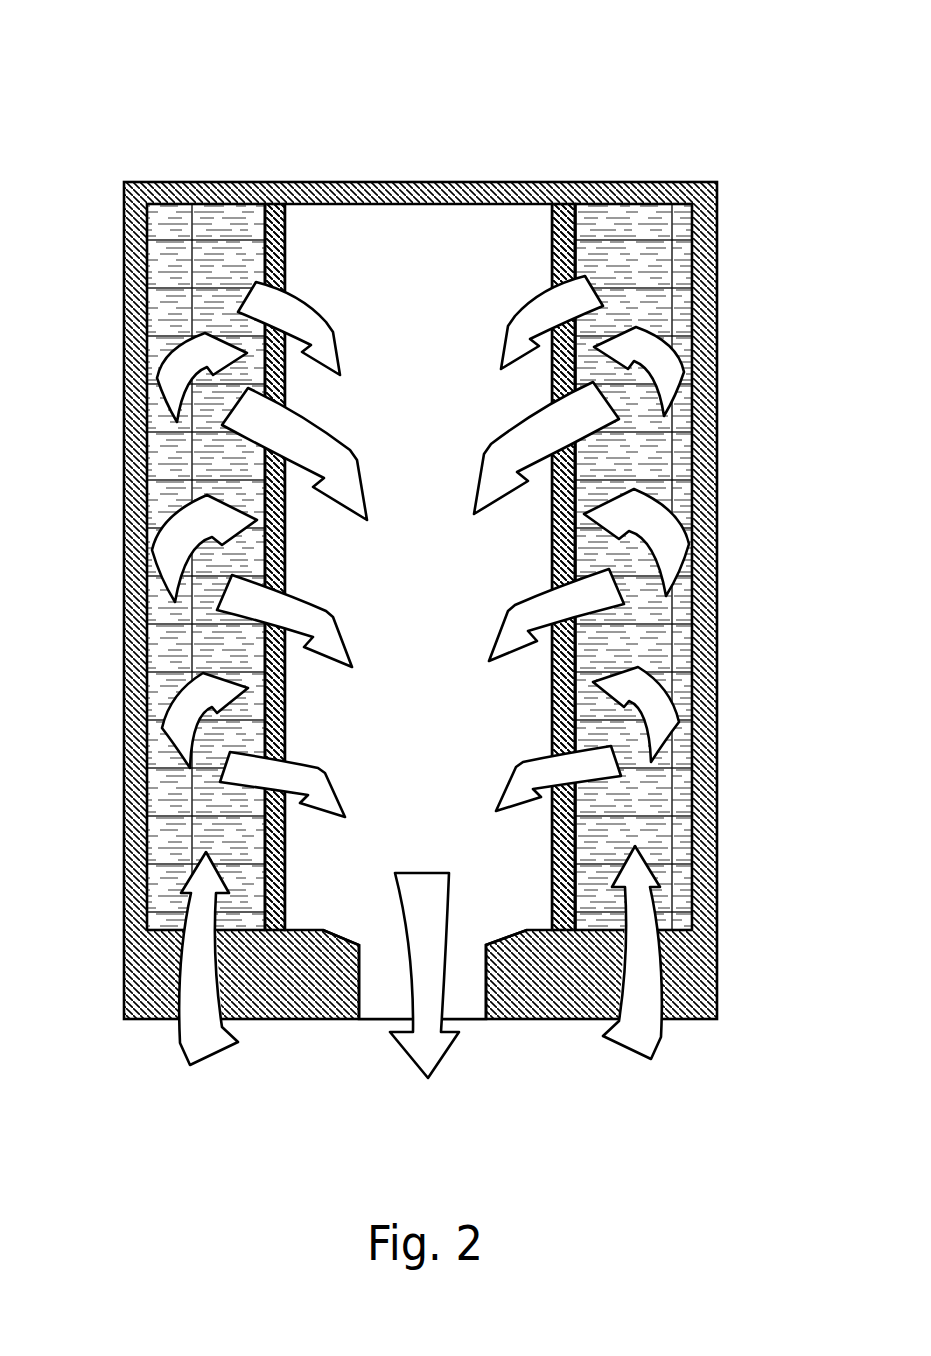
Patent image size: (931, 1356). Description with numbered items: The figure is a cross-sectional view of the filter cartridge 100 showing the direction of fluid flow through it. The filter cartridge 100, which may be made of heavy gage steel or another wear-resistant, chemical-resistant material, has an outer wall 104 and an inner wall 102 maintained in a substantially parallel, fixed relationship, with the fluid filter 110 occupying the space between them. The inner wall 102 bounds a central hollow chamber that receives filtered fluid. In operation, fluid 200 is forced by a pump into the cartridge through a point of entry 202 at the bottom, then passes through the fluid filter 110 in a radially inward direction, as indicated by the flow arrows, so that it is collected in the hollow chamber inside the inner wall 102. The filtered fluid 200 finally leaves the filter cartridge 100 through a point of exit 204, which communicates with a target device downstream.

The filter cartridge 100 is at (425, 562).
The inner wall 102 is at (562, 258).
The outer wall 104 is at (700, 265).
The fluid filter 110 is at (660, 455).
The fluid 200 is at (190, 962).
The point of entry 202 is at (170, 1032).
The point of exit 204 is at (469, 1032).